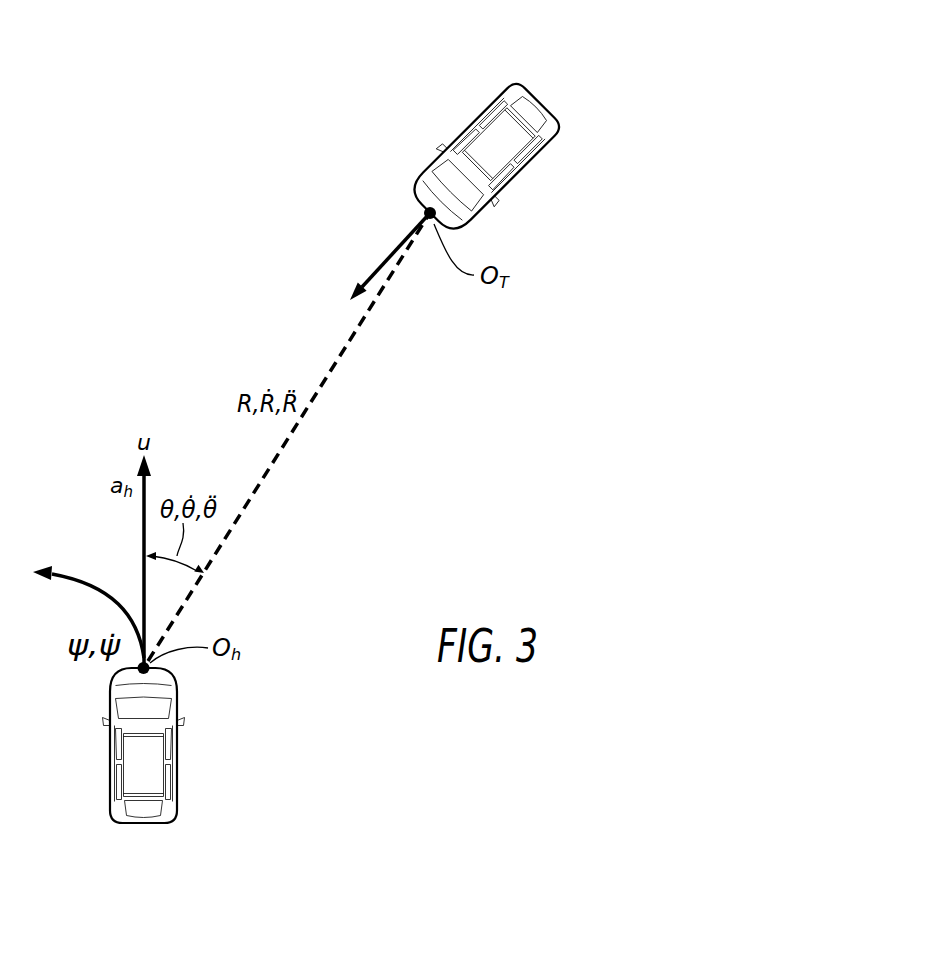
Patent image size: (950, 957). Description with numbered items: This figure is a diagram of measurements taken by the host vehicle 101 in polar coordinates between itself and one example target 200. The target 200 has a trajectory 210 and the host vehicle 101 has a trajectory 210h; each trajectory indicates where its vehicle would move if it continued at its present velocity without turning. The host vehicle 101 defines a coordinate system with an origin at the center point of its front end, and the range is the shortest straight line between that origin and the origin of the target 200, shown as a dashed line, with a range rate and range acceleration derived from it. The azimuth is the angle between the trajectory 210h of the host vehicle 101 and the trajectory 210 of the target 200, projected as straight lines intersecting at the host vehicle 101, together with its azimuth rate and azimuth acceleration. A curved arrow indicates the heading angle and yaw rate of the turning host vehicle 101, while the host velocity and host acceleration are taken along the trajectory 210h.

The host vehicle 101 is at (177, 787).
The target 200 is at (533, 97).
The trajectory 210 is at (388, 252).
The trajectory 210h is at (148, 490).